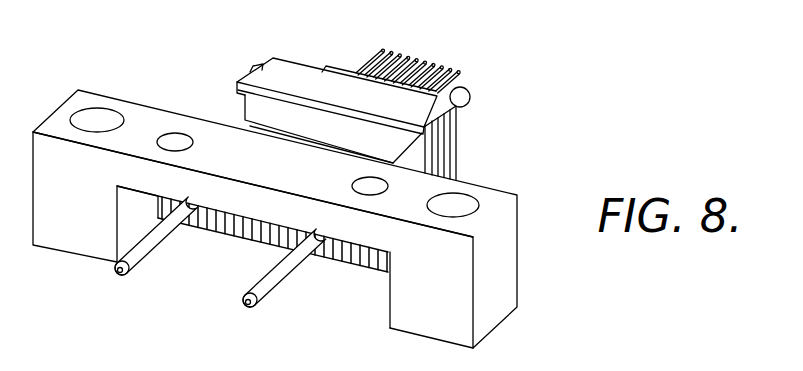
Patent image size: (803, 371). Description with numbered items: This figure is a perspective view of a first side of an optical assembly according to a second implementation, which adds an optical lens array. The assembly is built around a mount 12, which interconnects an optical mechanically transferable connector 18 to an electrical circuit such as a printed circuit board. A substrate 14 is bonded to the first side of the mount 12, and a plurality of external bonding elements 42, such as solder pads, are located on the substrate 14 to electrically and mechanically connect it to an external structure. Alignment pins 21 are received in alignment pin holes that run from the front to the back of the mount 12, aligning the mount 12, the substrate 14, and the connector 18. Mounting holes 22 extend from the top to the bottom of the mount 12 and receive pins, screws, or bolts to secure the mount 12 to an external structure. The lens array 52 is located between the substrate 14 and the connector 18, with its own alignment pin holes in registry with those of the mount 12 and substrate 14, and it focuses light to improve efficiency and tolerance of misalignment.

The mount 12 is at (508, 263).
The substrate 14 is at (344, 270).
The optical mechanically transferable (MT) connector 18 is at (283, 70).
The alignment pins 21 is at (272, 268).
The mounting holes 22 is at (92, 122).
The external bonding elements 42 is at (238, 236).
The lens array 52 is at (248, 125).